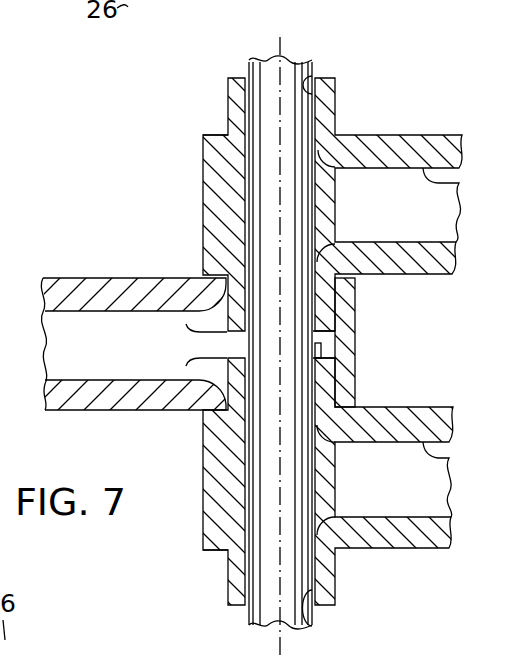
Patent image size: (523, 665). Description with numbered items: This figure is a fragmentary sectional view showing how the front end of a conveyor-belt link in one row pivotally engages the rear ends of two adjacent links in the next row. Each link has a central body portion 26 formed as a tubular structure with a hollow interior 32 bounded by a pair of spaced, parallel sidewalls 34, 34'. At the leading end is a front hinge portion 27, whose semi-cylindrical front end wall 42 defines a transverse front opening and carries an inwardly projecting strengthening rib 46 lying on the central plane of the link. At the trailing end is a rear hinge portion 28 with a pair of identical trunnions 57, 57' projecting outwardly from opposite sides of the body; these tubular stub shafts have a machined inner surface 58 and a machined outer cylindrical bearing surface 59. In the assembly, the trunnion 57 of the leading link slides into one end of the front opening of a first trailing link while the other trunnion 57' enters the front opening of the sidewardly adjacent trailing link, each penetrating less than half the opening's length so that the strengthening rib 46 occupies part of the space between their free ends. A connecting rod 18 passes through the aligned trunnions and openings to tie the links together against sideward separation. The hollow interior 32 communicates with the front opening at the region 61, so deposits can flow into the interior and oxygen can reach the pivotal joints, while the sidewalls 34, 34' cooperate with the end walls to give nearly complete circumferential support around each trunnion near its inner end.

The connecting rod 18 is at (290, 74).
The central body portion 26 is at (136, 423).
The front hinge portion 27 is at (380, 377).
The rear hinge portion 28 is at (190, 179).
The hollow interior 32 is at (56, 330).
The sidewall 34 is at (281, 430).
The sidewall 34' is at (278, 341).
The front end wall 42 is at (348, 312).
The strengthening rib 46 is at (321, 345).
The trunnion 57 is at (195, 394).
The trunnion 57' is at (195, 266).
The inner surface 58 is at (312, 71).
The outer cylindrical bearing surface 59 is at (338, 588).
The region 61 is at (206, 322).